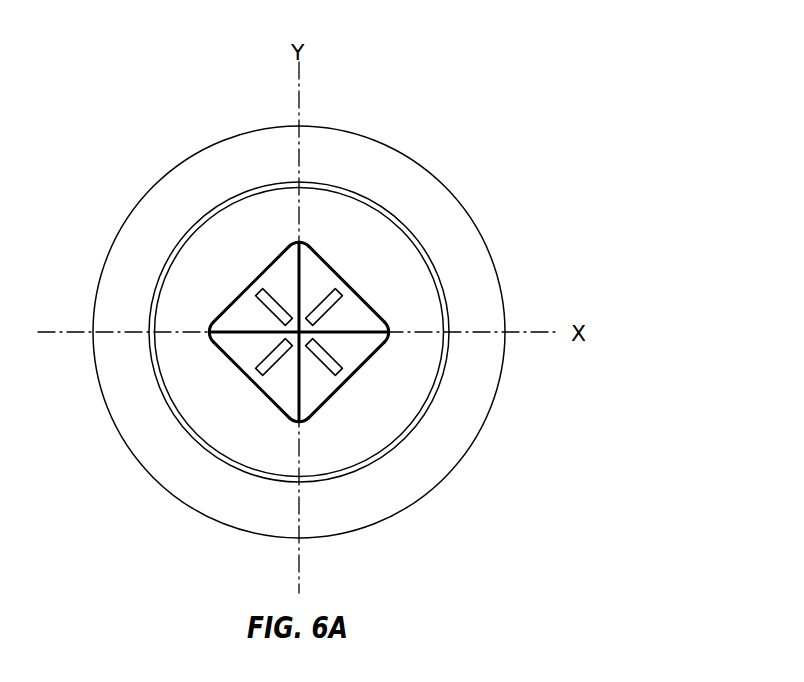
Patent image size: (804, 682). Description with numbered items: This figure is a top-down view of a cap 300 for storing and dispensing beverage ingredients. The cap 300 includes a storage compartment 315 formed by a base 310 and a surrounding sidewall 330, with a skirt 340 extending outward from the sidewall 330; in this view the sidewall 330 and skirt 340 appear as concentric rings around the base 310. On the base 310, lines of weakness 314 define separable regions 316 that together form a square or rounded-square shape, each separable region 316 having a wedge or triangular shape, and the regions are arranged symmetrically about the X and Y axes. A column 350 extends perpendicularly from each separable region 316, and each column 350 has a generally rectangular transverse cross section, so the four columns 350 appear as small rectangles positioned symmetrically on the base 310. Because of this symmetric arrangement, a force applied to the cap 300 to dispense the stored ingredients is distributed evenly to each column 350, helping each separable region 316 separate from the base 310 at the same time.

The cap 300 is at (197, 88).
The base 310 is at (350, 448).
The lines of weakness 314 is at (262, 277).
The storage compartment 315 is at (273, 232).
The separable regions 316 is at (275, 385).
The sidewall 330 is at (412, 428).
The skirt 340 is at (362, 150).
The columns 350 is at (258, 304).